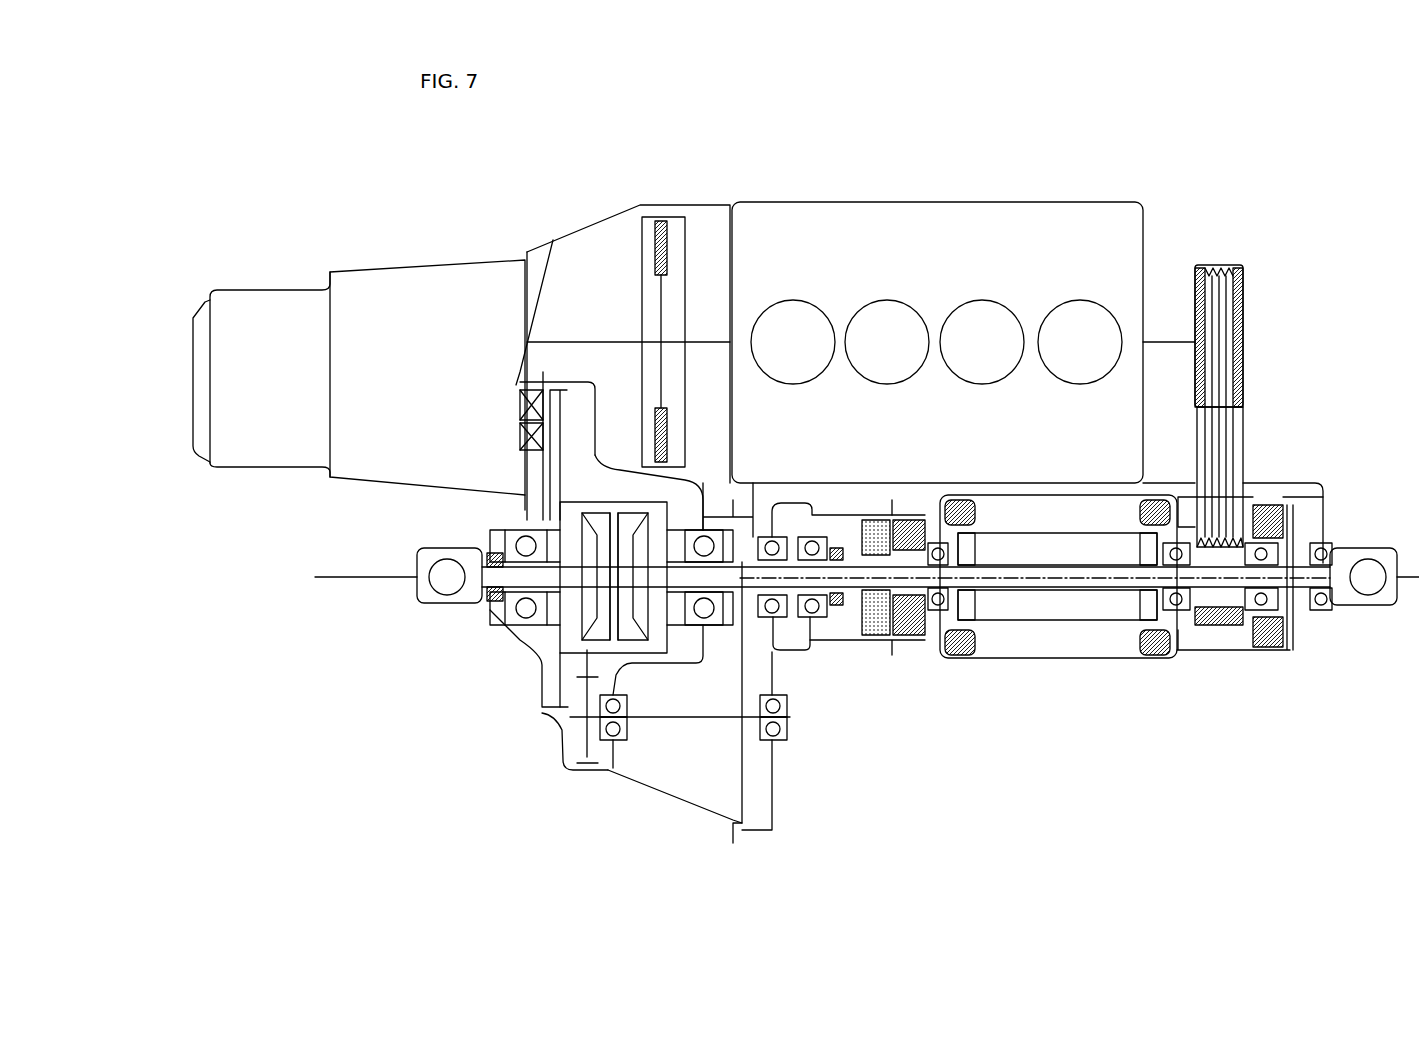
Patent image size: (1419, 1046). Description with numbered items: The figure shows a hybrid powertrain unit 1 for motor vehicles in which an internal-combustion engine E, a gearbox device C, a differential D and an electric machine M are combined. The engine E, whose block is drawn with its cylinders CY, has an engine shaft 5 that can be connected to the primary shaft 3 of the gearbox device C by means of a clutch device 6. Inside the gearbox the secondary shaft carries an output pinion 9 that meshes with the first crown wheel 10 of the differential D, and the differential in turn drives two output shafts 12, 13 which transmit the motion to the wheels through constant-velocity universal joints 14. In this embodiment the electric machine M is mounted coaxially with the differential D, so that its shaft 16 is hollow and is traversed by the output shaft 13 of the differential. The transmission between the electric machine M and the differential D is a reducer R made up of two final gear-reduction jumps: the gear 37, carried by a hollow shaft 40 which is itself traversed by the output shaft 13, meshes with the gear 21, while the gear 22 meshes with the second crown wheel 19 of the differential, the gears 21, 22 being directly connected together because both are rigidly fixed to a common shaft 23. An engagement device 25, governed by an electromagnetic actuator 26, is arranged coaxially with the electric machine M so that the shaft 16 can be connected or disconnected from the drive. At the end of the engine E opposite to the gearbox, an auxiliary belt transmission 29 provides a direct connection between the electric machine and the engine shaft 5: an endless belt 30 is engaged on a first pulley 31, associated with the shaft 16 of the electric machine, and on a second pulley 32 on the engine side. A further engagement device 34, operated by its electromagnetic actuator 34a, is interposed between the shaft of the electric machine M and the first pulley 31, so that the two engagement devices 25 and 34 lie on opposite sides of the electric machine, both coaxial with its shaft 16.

The hybrid powertrain unit 1 is at (303, 210).
The gearbox device C is at (190, 356).
The primary shaft 3 is at (580, 340).
The shaft of the engine 5 is at (712, 340).
The clutch device 6 is at (690, 240).
The internal-combustion engine E is at (1143, 236).
The cylinders CY is at (860, 305).
The output pinion 9 is at (565, 416).
The first crown wheel 10 is at (566, 487).
The constant-velocity universal joints 14 is at (447, 565).
The output shaft 12 is at (498, 600).
The differential D is at (528, 678).
The second crown wheel 19 is at (540, 720).
The gear 22 is at (560, 758).
The common shaft 23 is at (674, 725).
The gear 21 is at (745, 787).
The reducer R is at (673, 800).
The gear 37 is at (752, 520).
The hollow shaft 40 is at (795, 525).
The engagement device 25 is at (872, 632).
The electromagnetic actuator 26 is at (905, 632).
The electric machine M is at (1058, 660).
The shaft of the electric machine 16 is at (1090, 590).
The output shaft 13 is at (1030, 572).
The second pulley 32 is at (1230, 305).
The endless belt 30 is at (1232, 437).
The auxiliary belt transmission 29 is at (1255, 465).
The electromagnetic actuator 34a is at (1272, 508).
The engagement device 34 is at (1293, 655).
The first pulley 31 is at (1225, 617).